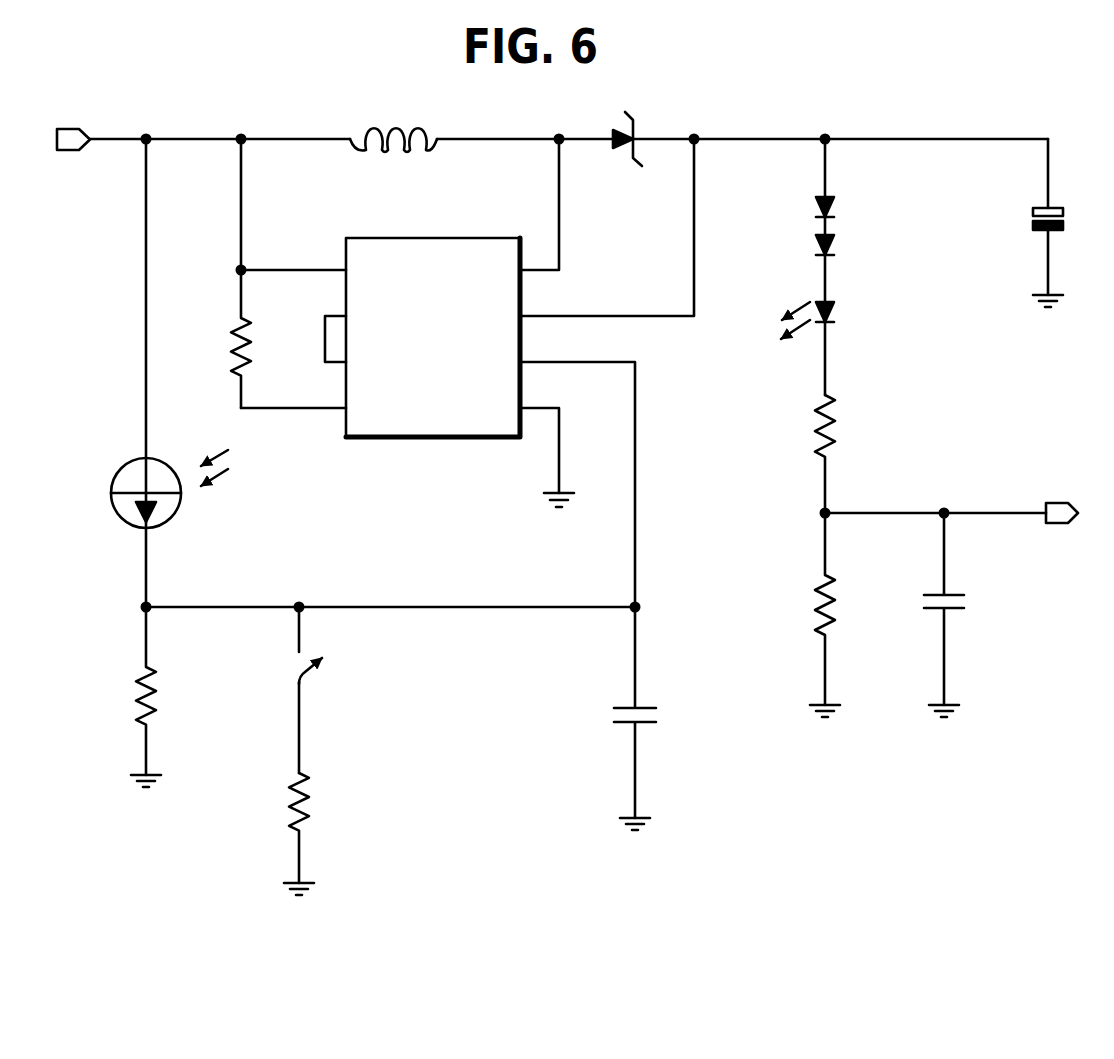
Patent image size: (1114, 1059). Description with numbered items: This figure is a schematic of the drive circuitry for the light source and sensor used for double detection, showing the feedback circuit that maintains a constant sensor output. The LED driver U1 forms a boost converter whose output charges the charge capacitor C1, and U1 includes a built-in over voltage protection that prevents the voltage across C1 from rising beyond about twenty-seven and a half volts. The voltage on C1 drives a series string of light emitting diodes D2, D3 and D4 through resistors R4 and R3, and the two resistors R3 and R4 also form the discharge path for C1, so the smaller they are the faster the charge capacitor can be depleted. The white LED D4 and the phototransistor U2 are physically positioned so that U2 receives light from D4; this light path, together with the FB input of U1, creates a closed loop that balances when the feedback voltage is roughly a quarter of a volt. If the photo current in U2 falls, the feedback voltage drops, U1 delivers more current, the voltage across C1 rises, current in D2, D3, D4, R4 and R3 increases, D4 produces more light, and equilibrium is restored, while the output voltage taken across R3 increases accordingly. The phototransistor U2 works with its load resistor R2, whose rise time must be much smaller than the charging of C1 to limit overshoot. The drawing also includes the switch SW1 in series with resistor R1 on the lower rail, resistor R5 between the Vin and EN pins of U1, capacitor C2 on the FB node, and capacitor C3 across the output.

The LED driver U1 is at (520, 373).
The phototransistor U2 is at (169, 489).
The resistor R1 is at (316, 834).
The load resistor R2 is at (162, 697).
The resistor R3 is at (843, 615).
The resistor R4 is at (846, 454).
The resistor R5 is at (260, 339).
The charge capacitor C1 is at (1063, 223).
The capacitor C2 is at (646, 718).
The capacitor C3 is at (956, 615).
The LED D2 is at (846, 215).
The LED D3 is at (846, 253).
The white LED D4 is at (828, 320).
The switch SW1 is at (336, 690).